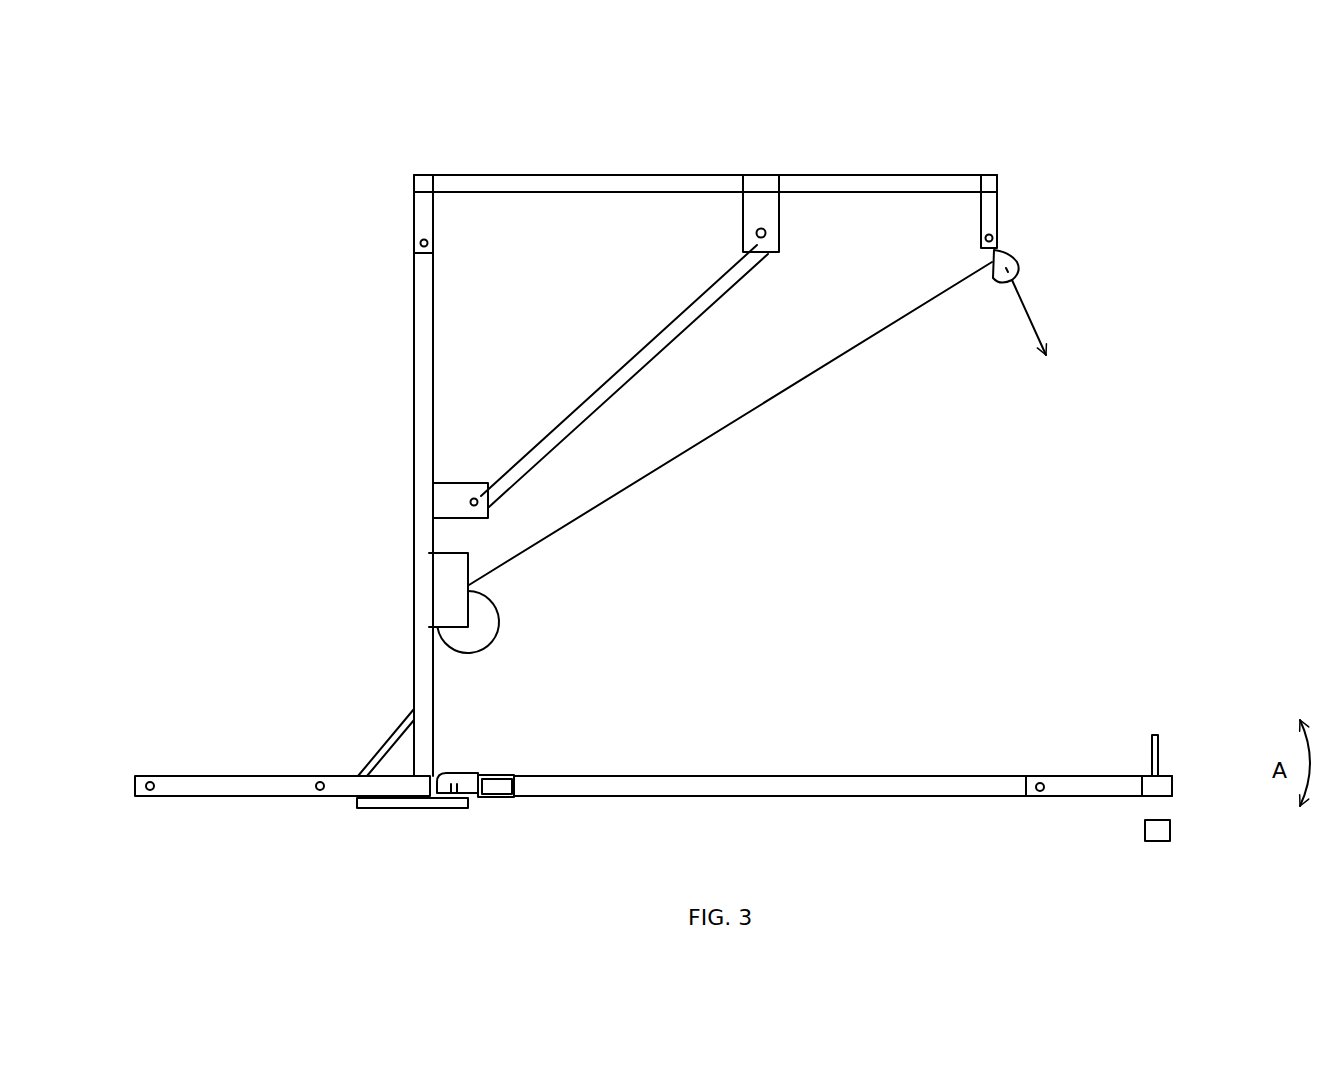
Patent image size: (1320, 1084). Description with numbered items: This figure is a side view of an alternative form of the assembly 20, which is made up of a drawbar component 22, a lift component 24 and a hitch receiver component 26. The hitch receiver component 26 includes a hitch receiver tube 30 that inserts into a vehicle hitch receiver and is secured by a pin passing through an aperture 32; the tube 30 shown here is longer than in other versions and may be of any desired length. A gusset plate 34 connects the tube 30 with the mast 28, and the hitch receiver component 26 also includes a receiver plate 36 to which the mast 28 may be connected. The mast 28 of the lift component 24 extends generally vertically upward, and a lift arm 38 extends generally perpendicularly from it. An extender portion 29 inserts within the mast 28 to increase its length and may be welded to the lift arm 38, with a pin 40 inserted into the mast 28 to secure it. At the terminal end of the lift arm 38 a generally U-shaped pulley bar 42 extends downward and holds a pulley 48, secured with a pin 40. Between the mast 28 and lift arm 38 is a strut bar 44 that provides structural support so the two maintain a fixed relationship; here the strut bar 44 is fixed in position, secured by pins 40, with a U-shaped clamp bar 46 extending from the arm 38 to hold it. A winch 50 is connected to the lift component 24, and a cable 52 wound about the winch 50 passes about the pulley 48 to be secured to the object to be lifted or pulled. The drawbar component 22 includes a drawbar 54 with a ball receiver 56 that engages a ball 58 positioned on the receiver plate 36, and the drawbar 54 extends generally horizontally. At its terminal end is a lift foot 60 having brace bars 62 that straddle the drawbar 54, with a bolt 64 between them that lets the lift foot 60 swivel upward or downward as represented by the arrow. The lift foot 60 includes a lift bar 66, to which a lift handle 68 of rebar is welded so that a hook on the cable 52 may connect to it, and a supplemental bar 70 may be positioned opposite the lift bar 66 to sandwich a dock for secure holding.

The assembly 20 is at (320, 119).
The drawbar component 22 is at (1102, 612).
The lift component 24 is at (1040, 421).
The hitch receiver component 26 is at (386, 838).
The mast 28 is at (425, 352).
The extender portion 29 is at (425, 214).
The hitch receiver tube 30 is at (234, 782).
The aperture 32 is at (150, 770).
The gusset plate 34 is at (392, 745).
The receiver plate 36 is at (437, 806).
The lift arm 38 is at (625, 190).
The pin 40 is at (448, 243).
The pulley bar 42 is at (1003, 215).
The strut bar 44 is at (606, 390).
The clamp bar 46 is at (780, 215).
The pulley 48 is at (990, 282).
The winch 50 is at (522, 608).
The cable 52 is at (838, 356).
The drawbar 54 is at (770, 782).
The ball receiver 56 is at (490, 772).
The ball 58 is at (460, 770).
The lift foot 60 is at (1093, 746).
The brace bars 62 is at (1093, 797).
The bolt 64 is at (1040, 793).
The lift bar 66 is at (1163, 784).
The lift handle 68 is at (1160, 748).
The supplemental bar 70 is at (1172, 830).